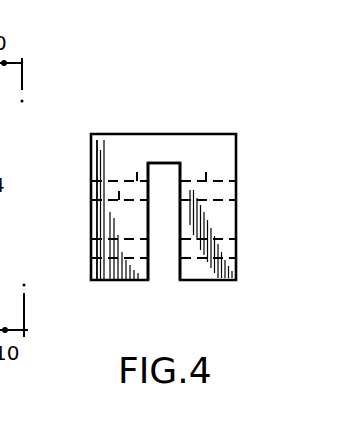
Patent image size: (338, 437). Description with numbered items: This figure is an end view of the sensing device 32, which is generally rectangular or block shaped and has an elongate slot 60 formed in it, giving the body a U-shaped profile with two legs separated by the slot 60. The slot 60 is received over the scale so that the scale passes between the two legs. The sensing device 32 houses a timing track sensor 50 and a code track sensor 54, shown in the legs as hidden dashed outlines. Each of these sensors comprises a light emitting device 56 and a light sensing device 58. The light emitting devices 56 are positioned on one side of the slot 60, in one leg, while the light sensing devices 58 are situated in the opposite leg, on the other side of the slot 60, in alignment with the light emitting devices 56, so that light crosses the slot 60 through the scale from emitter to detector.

The sensing device 32 is at (157, 134).
The timing track sensor 50 is at (92, 254).
The code track sensor 54 is at (92, 194).
The light emitting device 56 is at (137, 178).
The light sensing device 58 is at (206, 178).
The elongate slot 60 is at (152, 262).